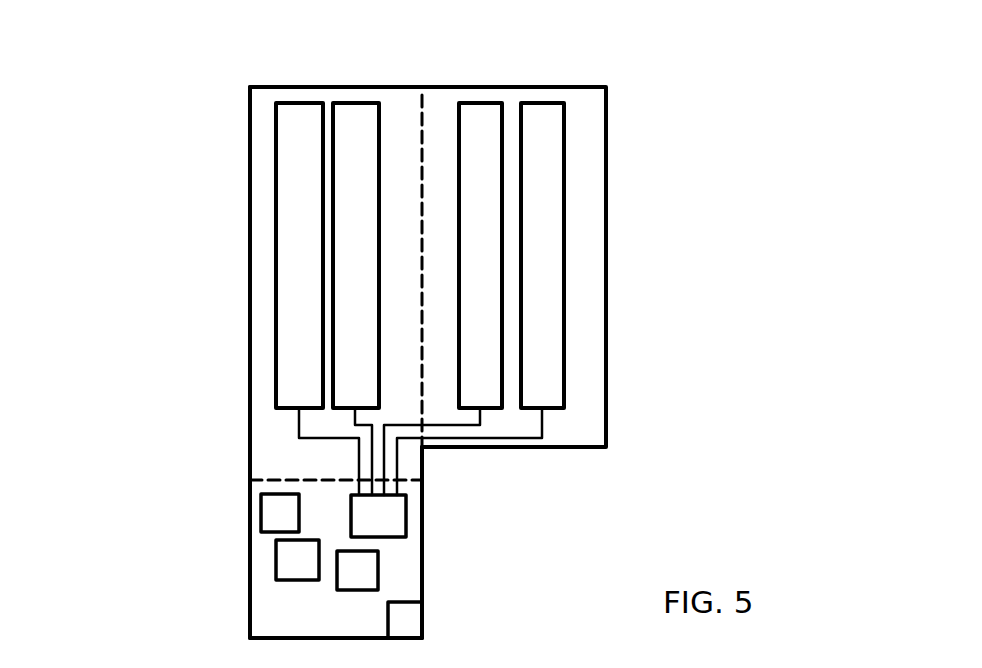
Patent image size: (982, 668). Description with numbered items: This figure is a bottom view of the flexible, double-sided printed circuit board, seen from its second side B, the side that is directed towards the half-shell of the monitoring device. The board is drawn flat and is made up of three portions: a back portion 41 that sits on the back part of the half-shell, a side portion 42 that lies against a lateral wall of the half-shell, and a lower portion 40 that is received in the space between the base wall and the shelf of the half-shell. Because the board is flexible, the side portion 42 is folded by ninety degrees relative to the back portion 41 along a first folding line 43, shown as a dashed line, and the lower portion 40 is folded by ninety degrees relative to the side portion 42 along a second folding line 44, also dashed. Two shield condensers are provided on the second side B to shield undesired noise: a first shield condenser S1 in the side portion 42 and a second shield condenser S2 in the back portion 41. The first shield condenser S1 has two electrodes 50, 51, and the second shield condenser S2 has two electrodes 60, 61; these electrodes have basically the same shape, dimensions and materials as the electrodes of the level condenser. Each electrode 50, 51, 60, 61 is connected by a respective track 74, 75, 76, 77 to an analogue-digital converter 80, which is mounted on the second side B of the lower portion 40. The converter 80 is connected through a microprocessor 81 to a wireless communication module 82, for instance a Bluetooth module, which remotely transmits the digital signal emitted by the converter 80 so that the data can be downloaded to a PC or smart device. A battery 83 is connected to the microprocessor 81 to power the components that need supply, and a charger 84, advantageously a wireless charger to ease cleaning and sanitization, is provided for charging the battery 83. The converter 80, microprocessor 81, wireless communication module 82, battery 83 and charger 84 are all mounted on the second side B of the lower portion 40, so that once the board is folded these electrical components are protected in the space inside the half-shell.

The lower portion 40 is at (267, 610).
The back portion 41 is at (590, 285).
The side portion 42 is at (262, 303).
The first folding line 43 is at (422, 175).
The second folding line 44 is at (278, 480).
The electrode 50 is at (555, 165).
The electrode 51 is at (490, 223).
The electrode 60 is at (293, 163).
The electrode 61 is at (362, 130).
The track 74 is at (522, 438).
The track 75 is at (450, 428).
The track 76 is at (298, 422).
The track 77 is at (350, 420).
The analogue-digital converter 80 is at (392, 520).
The microprocessor 81 is at (365, 573).
The wireless communication module 82 is at (415, 625).
The battery 83 is at (287, 567).
The charger 84 is at (277, 507).
The first shield condenser S1 is at (513, 104).
The second shield condenser S2 is at (326, 104).
The second side B is at (272, 216).